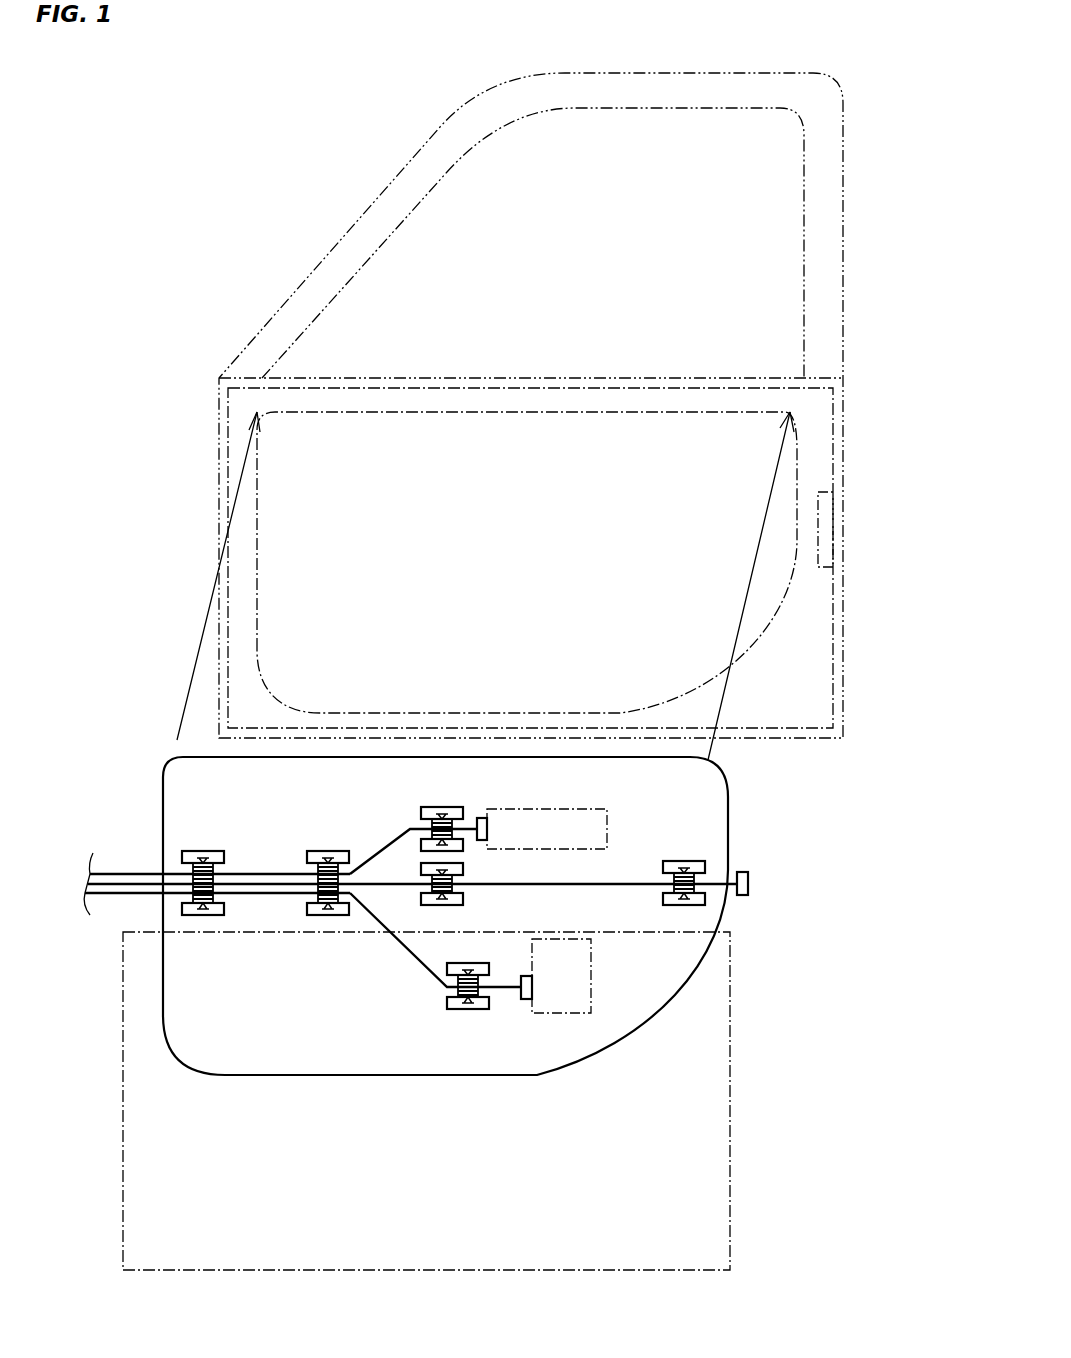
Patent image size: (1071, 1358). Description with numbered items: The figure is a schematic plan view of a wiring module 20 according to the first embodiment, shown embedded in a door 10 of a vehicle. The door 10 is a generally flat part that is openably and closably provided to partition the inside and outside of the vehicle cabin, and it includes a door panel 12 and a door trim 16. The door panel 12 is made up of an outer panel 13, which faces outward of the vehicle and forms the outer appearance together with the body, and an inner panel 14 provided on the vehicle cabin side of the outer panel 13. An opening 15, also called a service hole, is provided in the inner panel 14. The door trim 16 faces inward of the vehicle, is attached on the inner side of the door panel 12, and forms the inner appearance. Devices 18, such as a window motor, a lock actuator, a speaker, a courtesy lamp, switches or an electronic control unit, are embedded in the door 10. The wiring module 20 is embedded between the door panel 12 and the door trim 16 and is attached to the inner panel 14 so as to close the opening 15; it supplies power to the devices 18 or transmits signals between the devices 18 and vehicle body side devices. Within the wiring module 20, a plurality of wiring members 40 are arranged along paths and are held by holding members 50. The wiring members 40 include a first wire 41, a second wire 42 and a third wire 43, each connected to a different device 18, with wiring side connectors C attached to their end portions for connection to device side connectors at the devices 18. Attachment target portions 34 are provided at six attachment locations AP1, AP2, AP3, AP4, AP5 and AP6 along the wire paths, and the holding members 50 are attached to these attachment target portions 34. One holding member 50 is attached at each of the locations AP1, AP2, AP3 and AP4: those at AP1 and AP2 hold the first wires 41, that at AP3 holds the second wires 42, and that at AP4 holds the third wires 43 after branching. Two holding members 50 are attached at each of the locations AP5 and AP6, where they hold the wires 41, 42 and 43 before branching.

The door 10 is at (206, 123).
The door panel 12 is at (898, 410).
The outer panel 13 is at (843, 425).
The inner panel 14 is at (833, 458).
The opening 15 is at (745, 650).
The door trim 16 is at (730, 1160).
The device 18 is at (826, 567).
The wiring module 20 is at (158, 775).
The attachment target portion 34 is at (205, 917).
The wiring member 40 is at (131, 871).
The first wire 41 is at (540, 883).
The second wire 42 is at (412, 954).
The third wire 43 is at (388, 850).
The holding member 50 is at (230, 908).
The wiring side connector C is at (485, 841).
The attachment location AP1 is at (685, 857).
The attachment location AP2 is at (467, 890).
The attachment location AP3 is at (482, 1015).
The attachment location AP4 is at (458, 803).
The attachment location AP5 is at (328, 847).
The attachment location AP6 is at (206, 847).